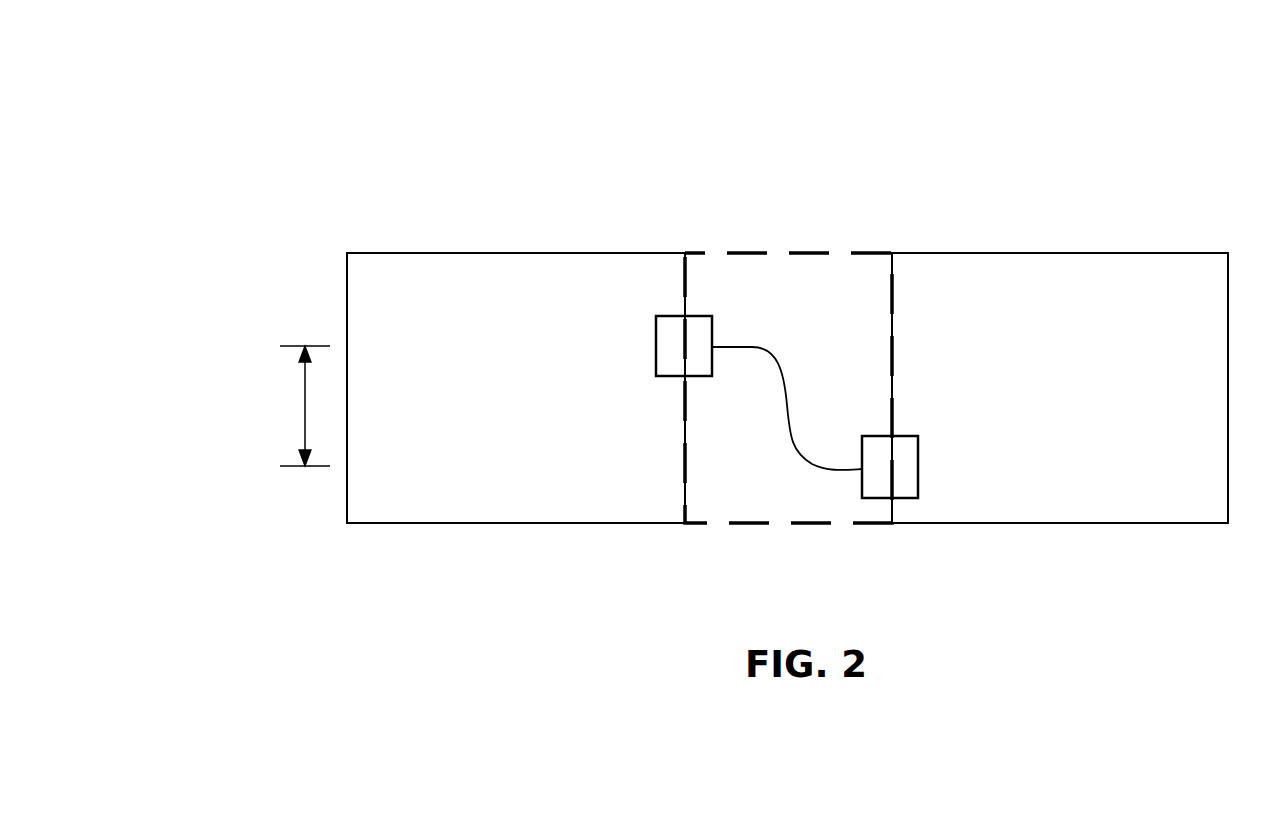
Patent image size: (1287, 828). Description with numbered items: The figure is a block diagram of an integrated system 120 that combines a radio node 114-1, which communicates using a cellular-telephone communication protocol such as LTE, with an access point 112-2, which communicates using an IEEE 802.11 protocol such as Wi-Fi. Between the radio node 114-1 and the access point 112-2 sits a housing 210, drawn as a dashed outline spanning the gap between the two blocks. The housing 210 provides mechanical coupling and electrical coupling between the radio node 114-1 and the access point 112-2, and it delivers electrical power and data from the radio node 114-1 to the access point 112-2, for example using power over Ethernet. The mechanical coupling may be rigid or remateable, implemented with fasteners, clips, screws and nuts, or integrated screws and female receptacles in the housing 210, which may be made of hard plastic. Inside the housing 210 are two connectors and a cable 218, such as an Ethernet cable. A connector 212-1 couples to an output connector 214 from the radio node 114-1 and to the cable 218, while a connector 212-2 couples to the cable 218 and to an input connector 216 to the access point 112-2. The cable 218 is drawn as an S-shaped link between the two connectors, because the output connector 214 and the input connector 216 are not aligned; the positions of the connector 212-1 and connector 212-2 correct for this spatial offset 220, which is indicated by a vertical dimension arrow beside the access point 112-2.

The integrated system 120 is at (1048, 111).
The access point 112-2 is at (543, 423).
The radio node 114-1 is at (1033, 423).
The housing 210 is at (843, 252).
The connector 212-1 is at (862, 476).
The connector 212-2 is at (746, 241).
The output connector 214 is at (915, 534).
The input connector 216 is at (644, 241).
The cable 218 is at (767, 348).
The spatial offset 220 is at (303, 412).